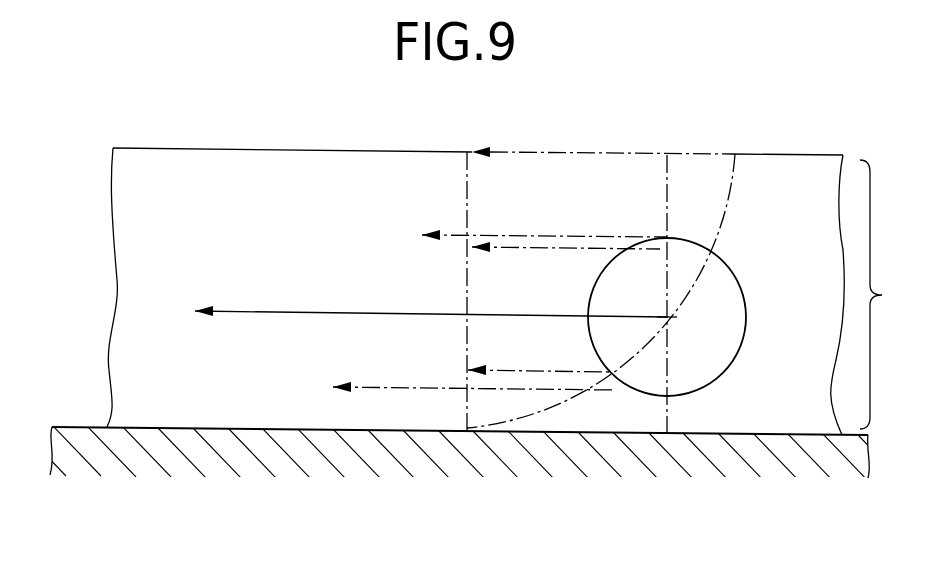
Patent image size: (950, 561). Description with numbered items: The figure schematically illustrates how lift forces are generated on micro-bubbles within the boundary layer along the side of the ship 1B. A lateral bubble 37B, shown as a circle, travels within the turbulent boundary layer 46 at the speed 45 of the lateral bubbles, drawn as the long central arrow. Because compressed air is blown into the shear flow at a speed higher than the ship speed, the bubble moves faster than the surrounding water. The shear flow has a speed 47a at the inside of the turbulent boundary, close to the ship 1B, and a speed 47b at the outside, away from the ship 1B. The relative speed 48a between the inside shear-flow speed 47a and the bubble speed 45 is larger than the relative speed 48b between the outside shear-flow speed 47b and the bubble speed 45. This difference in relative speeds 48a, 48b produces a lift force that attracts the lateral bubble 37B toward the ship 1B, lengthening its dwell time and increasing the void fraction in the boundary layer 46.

The ship 1B is at (79, 405).
The speed of the lateral bubbles 45 is at (251, 312).
The boundary layer 46 is at (829, 294).
The lateral bubbles 37B is at (725, 268).
The speed of shear flow at the inside of turbulent boundary 47a is at (533, 371).
The speed of shear flow at the outside of turbulent boundary 47b is at (570, 248).
The relative speed 48a is at (610, 389).
The relative speed 48b is at (544, 235).